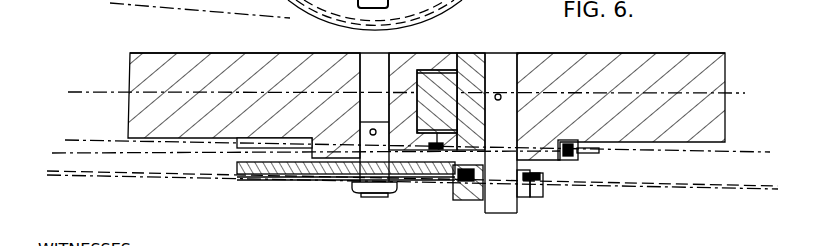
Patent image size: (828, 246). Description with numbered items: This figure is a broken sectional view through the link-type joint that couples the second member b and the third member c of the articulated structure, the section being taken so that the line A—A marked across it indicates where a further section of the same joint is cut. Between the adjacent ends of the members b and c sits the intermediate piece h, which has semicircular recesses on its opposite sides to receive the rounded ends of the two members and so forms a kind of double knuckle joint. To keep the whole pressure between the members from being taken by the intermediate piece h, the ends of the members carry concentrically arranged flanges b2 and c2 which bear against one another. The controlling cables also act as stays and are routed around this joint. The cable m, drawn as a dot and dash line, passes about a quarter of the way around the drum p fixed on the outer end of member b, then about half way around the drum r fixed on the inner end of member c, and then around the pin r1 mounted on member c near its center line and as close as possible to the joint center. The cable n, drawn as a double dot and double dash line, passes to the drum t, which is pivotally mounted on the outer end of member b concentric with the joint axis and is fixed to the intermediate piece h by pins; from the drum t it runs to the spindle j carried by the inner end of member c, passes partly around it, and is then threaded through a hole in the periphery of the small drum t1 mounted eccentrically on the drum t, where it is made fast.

The member b is at (180, 64).
The flange b2 is at (390, 133).
The member c is at (684, 72).
The flange c2 is at (461, 196).
The intermediate piece h is at (442, 83).
The spindle j is at (507, 196).
The cable m is at (77, 152).
The cable n is at (116, 4).
The drum p is at (333, 179).
The drum t is at (293, 178).
The small drum t1 is at (538, 197).
The drum r is at (562, 162).
The pin r1 is at (578, 158).
The section line A is at (400, 93).